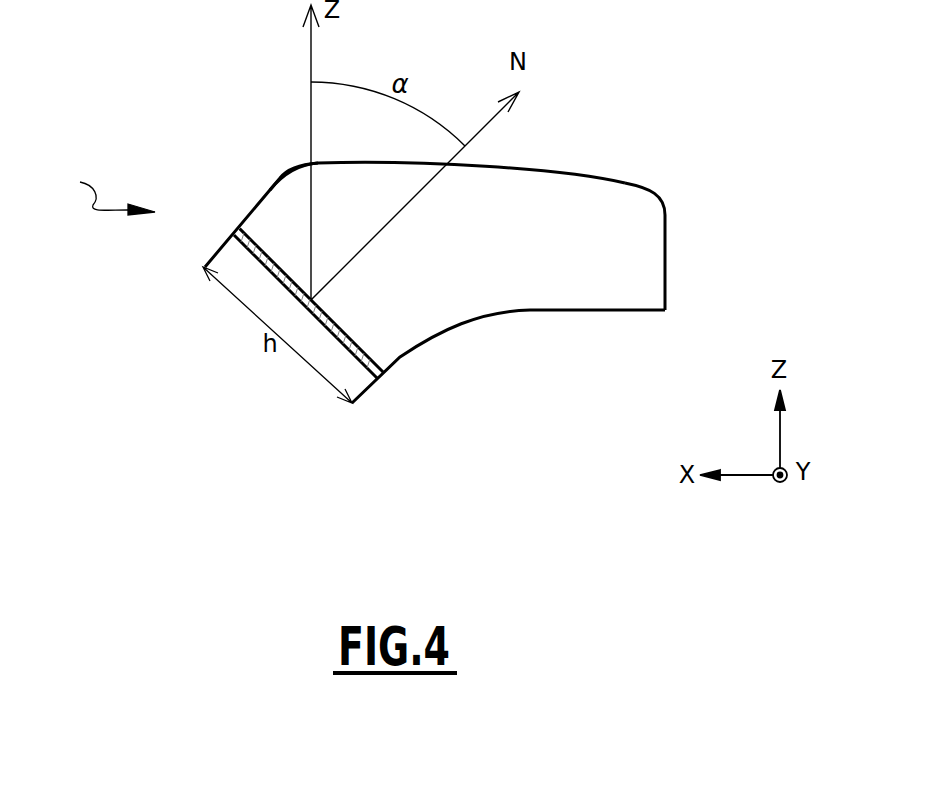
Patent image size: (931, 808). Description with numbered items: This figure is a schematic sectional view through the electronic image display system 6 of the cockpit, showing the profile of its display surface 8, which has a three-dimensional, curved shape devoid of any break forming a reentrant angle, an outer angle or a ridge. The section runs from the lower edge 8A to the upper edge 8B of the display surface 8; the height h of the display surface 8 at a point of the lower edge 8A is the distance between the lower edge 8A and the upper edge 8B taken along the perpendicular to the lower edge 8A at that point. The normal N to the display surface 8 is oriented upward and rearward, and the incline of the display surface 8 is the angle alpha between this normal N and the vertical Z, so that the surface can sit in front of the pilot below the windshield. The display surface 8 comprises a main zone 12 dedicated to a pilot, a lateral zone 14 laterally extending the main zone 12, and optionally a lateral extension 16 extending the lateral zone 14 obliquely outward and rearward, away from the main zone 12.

The electronic image display system 6 is at (107, 189).
The display surface 8 is at (456, 256).
The lower edge 8A is at (425, 340).
The upper edge 8B is at (558, 170).
The main zone 12 is at (268, 243).
The lateral zone 14 is at (292, 197).
The lateral extension 16 is at (613, 215).